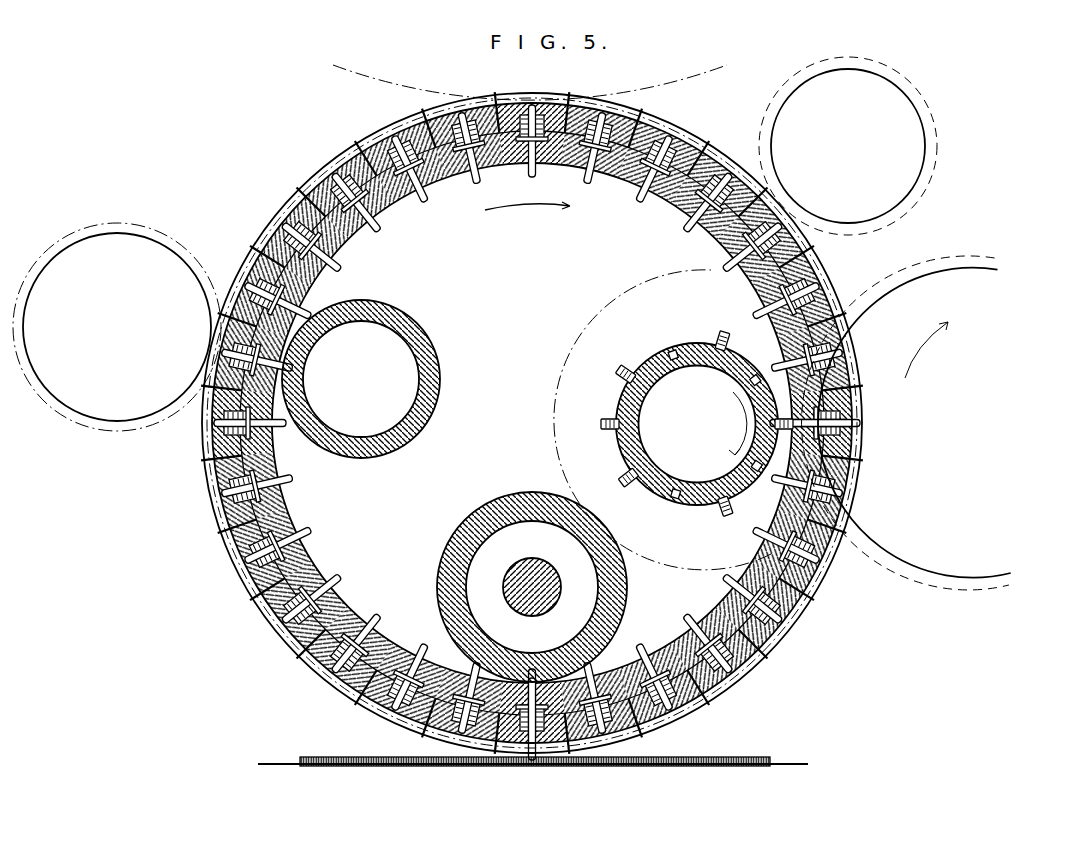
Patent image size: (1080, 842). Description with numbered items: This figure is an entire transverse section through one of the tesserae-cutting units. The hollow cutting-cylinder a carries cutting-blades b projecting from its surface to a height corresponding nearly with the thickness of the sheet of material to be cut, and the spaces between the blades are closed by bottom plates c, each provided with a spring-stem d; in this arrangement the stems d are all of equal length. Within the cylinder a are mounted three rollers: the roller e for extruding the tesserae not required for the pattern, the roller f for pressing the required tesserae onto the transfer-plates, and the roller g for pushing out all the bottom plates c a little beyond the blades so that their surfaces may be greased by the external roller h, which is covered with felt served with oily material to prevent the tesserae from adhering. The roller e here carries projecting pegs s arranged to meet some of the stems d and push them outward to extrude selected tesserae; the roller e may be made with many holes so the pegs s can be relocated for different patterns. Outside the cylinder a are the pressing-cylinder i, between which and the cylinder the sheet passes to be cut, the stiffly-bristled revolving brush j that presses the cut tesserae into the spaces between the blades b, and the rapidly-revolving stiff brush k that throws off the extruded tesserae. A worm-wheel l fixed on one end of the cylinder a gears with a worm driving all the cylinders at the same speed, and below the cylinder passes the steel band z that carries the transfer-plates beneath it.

The cutting-cylinder a is at (532, 423).
The cutting-blades b is at (365, 147).
The bottom plates c is at (668, 140).
The stems d is at (478, 178).
The internal roller e is at (666, 420).
The internal roller f is at (532, 587).
The internal roller g is at (361, 379).
The greasing-roller h is at (117, 327).
The pressing-cylinder i is at (530, 80).
The revolving brush j is at (848, 146).
The revolving brush k is at (906, 423).
The worm-wheel l is at (697, 757).
The projecting pegs s is at (712, 338).
The steel band z is at (793, 767).